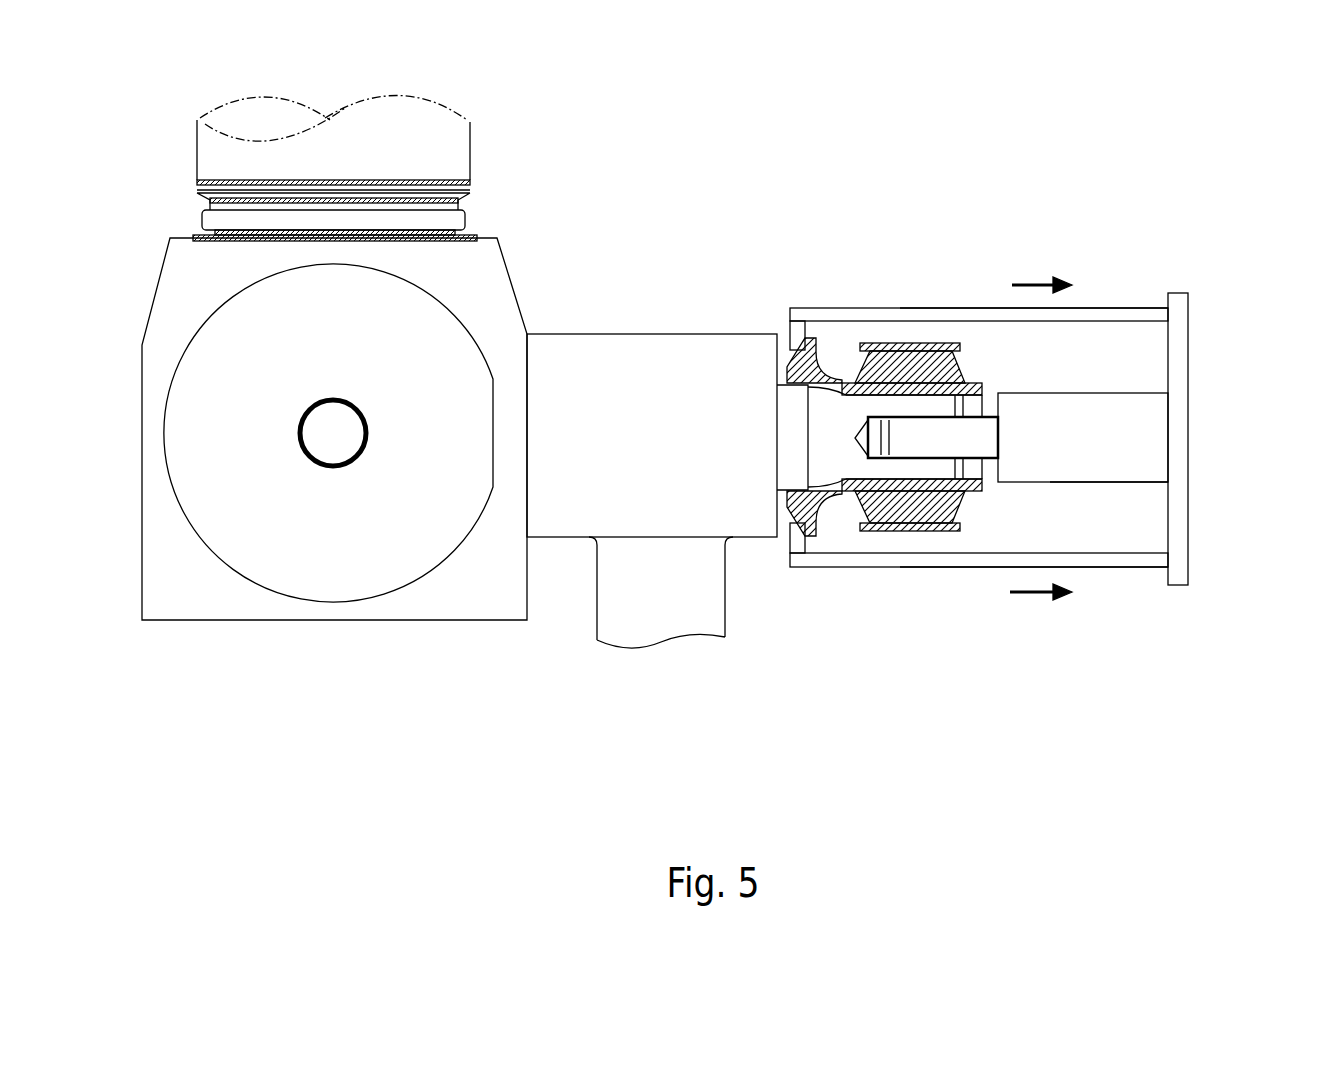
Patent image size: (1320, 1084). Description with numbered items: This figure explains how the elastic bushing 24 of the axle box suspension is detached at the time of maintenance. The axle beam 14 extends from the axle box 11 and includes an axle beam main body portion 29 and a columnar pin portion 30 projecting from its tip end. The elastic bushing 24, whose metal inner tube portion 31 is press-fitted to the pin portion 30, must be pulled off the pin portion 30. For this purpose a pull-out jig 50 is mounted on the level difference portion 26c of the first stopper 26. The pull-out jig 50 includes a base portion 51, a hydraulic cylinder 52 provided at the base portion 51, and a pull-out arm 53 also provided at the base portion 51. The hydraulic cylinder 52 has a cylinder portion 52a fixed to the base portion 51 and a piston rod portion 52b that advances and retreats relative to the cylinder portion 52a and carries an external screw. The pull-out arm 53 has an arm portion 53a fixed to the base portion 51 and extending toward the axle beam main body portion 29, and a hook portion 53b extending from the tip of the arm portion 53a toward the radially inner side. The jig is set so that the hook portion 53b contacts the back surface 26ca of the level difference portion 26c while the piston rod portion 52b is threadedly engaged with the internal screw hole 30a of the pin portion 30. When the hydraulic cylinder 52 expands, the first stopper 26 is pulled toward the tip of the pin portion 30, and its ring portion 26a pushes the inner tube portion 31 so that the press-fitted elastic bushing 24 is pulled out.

The axle box 11 is at (191, 622).
The axle beam 14 is at (572, 347).
The axle beam main body portion 29 is at (613, 347).
The first stopper 26 is at (808, 348).
The ring portion 26a is at (835, 522).
The level difference portion 26c is at (787, 347).
The back surface 26ca is at (800, 347).
The elastic bushing 24 is at (930, 355).
The inner tube portion 31 is at (883, 405).
The pin portion 30 is at (862, 468).
The internal screw hole 30a is at (907, 458).
The pull-out jig 50 is at (1148, 258).
The base portion 51 is at (1190, 356).
The hydraulic cylinder 52 is at (1015, 483).
The cylinder portion 52a is at (1095, 470).
The piston rod portion 52b is at (940, 448).
The pull-out arm 53 is at (953, 307).
The arm portion 53a is at (1097, 307).
The hook portion 53b is at (787, 350).